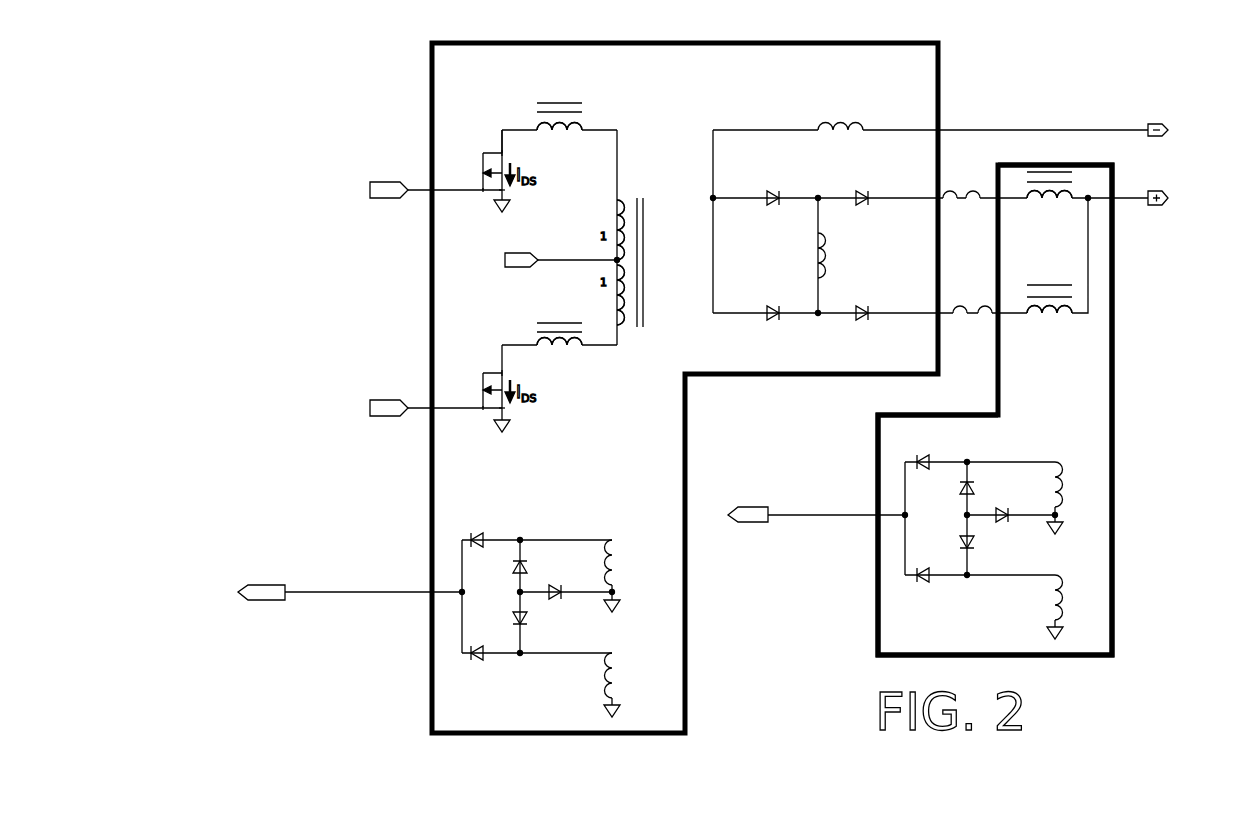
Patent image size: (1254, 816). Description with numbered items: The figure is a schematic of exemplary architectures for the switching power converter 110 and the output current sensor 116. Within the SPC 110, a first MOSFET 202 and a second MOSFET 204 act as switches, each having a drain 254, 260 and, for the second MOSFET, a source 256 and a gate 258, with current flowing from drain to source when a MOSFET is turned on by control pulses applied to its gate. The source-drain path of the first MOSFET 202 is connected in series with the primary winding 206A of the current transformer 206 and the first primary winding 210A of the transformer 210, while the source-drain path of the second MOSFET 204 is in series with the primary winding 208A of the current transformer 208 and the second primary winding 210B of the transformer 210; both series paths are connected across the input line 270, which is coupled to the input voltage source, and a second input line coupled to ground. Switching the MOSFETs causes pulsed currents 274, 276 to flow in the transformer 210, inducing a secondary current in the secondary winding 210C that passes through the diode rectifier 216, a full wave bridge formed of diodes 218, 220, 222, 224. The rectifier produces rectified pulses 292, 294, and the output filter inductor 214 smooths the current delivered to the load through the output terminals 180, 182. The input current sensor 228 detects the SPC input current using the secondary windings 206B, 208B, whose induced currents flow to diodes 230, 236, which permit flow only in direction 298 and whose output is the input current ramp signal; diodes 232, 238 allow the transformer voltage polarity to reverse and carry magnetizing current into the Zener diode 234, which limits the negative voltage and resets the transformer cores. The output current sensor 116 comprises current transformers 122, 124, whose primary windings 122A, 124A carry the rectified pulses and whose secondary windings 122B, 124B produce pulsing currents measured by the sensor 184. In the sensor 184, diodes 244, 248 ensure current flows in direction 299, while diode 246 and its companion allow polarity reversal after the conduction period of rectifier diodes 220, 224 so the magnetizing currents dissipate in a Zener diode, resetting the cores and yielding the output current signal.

The switching power converter 110 is at (685, 388).
The output current sensor 116 is at (894, 417).
The sensor 184 is at (995, 410).
The first MOSFET 202 is at (472, 165).
The second MOSFET 204 is at (471, 396).
The first current transformer 206 is at (563, 148).
The primary winding of current transformer 206 206A is at (561, 146).
The secondary winding of current transformer 206 206B is at (635, 576).
The second current transformer 208 is at (559, 348).
The primary winding of current transformer 208 208A is at (561, 359).
The secondary winding of current transformer 208 208B is at (638, 685).
The transformer 210 is at (638, 247).
The first primary winding of transformer 210 210A is at (591, 230).
The second primary winding of transformer 210 210B is at (594, 295).
The secondary winding of transformer 210 210C is at (795, 255).
The inductor 214 is at (840, 110).
The diode rectifier 216 is at (823, 174).
The diode 218 is at (779, 186).
The diode 220 is at (864, 186).
The diode 222 is at (779, 301).
The diode 224 is at (864, 301).
The input current sensor 228 is at (572, 569).
The diode 230 is at (469, 525).
The diode 232 is at (502, 571).
The Zener diode 234 is at (561, 580).
The diode 236 is at (488, 642).
The diode 238 is at (540, 628).
The diode 244 is at (918, 447).
The diode 246 is at (946, 491).
The diode 248 is at (933, 559).
The drain terminal 254 is at (514, 151).
The source terminal 256 is at (520, 416).
The gate terminal 258 is at (462, 416).
The drain terminal 260 is at (483, 360).
The input line 270 is at (557, 261).
The pulsed current 274 is at (604, 306).
The pulsed current 276 is at (603, 214).
The rectified pulse 292 is at (985, 178).
The rectified pulse 294 is at (990, 292).
The direction of current flow 298 is at (422, 608).
The direction of output current 299 is at (863, 525).
The current transformer 122 is at (1087, 186).
The primary winding of current transformer 122 122A is at (1049, 212).
The secondary winding of current transformer 122 122B is at (1078, 498).
The current transformer 124 is at (1057, 255).
The primary winding of current transformer 124 124A is at (1049, 328).
The secondary winding of current transformer 124 124B is at (1033, 607).
The output terminal 180 is at (1186, 153).
The output terminal 182 is at (1186, 183).